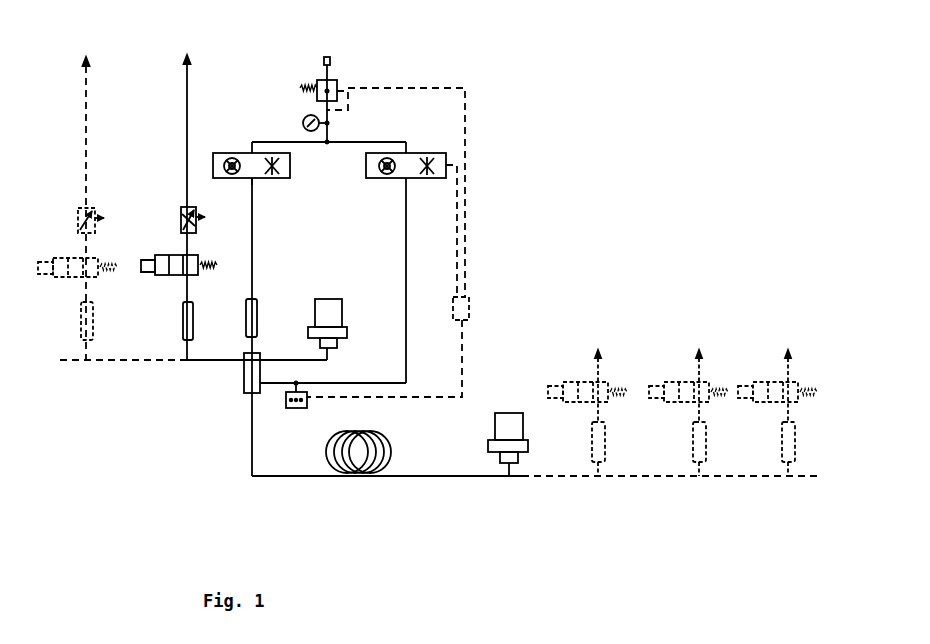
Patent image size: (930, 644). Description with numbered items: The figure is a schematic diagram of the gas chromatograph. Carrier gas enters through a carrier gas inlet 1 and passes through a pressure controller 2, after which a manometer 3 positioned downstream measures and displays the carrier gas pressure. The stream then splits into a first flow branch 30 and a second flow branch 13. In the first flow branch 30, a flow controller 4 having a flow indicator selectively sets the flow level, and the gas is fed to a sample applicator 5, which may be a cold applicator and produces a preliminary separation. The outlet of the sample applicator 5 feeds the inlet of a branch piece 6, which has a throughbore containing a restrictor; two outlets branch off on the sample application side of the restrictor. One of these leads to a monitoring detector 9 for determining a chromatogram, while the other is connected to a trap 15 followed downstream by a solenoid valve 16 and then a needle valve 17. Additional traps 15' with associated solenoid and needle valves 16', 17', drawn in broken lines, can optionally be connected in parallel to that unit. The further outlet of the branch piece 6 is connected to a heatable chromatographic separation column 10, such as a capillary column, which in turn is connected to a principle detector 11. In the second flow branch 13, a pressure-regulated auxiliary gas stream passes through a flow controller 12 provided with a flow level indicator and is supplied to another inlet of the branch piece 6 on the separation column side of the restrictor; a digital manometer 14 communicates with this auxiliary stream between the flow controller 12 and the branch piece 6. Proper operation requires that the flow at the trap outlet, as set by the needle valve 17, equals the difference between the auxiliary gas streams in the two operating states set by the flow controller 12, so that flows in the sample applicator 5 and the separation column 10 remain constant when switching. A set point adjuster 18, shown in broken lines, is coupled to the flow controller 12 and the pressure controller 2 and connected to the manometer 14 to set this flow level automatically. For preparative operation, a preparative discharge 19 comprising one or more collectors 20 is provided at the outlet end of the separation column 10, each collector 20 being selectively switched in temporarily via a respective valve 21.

The carrier gas inlet 1 is at (325, 58).
The pressure controller 2 is at (317, 80).
The manometer 3 is at (303, 120).
The flow controller 4 is at (260, 180).
The sample applicator 5 is at (259, 318).
The branch piece 6 is at (243, 381).
The monitoring detector 9 is at (342, 317).
The chromatographic separation column 10 is at (392, 450).
The principle detector 11 is at (507, 412).
The flow controller 12 is at (397, 180).
The second flow branch 13 is at (400, 252).
The digital manometer 14 is at (299, 410).
The trap 15 is at (165, 320).
The solenoid valve 16 is at (177, 254).
The needle valve 17 is at (171, 210).
The additional trap 15' is at (60, 320).
The solenoid valve 16' is at (72, 255).
The needle valve 17' is at (66, 210).
The set point adjuster 18 is at (470, 305).
The preparative discharge 19 is at (562, 479).
The collector 20 is at (605, 441).
The valve 21 is at (607, 382).
The first flow branch 30 is at (268, 253).